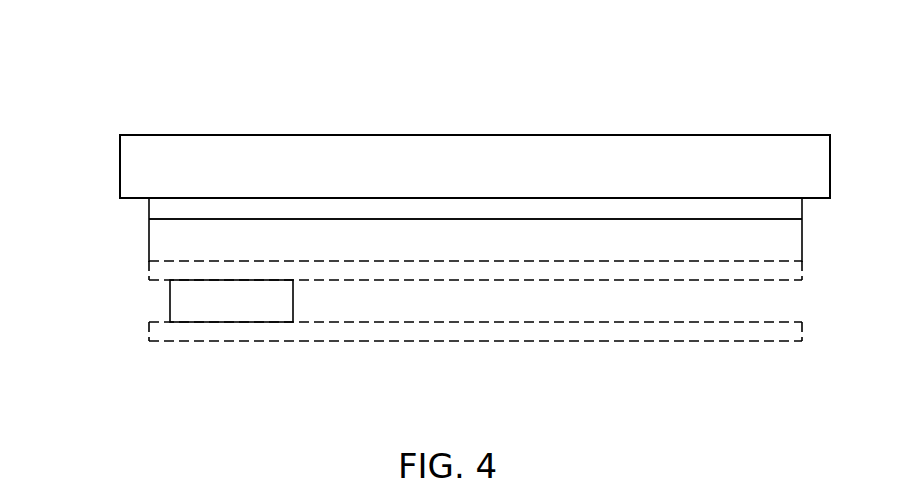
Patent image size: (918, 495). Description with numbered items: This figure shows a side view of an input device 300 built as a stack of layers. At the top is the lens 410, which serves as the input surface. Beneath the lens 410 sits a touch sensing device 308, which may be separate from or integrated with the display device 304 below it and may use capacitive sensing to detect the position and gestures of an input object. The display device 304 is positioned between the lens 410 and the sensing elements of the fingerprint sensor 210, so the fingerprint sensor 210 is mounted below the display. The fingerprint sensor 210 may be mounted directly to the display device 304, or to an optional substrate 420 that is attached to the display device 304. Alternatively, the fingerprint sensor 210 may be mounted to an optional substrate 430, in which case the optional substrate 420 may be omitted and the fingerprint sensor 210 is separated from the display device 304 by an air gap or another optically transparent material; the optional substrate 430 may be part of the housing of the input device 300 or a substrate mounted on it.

The input device 300 is at (135, 108).
The lens 410 is at (140, 167).
The touch sensing device 308 is at (158, 208).
The display device 304 is at (162, 243).
The optional substrate 420 is at (160, 271).
The fingerprint sensor 210 is at (187, 310).
The optional substrate 430 is at (162, 332).